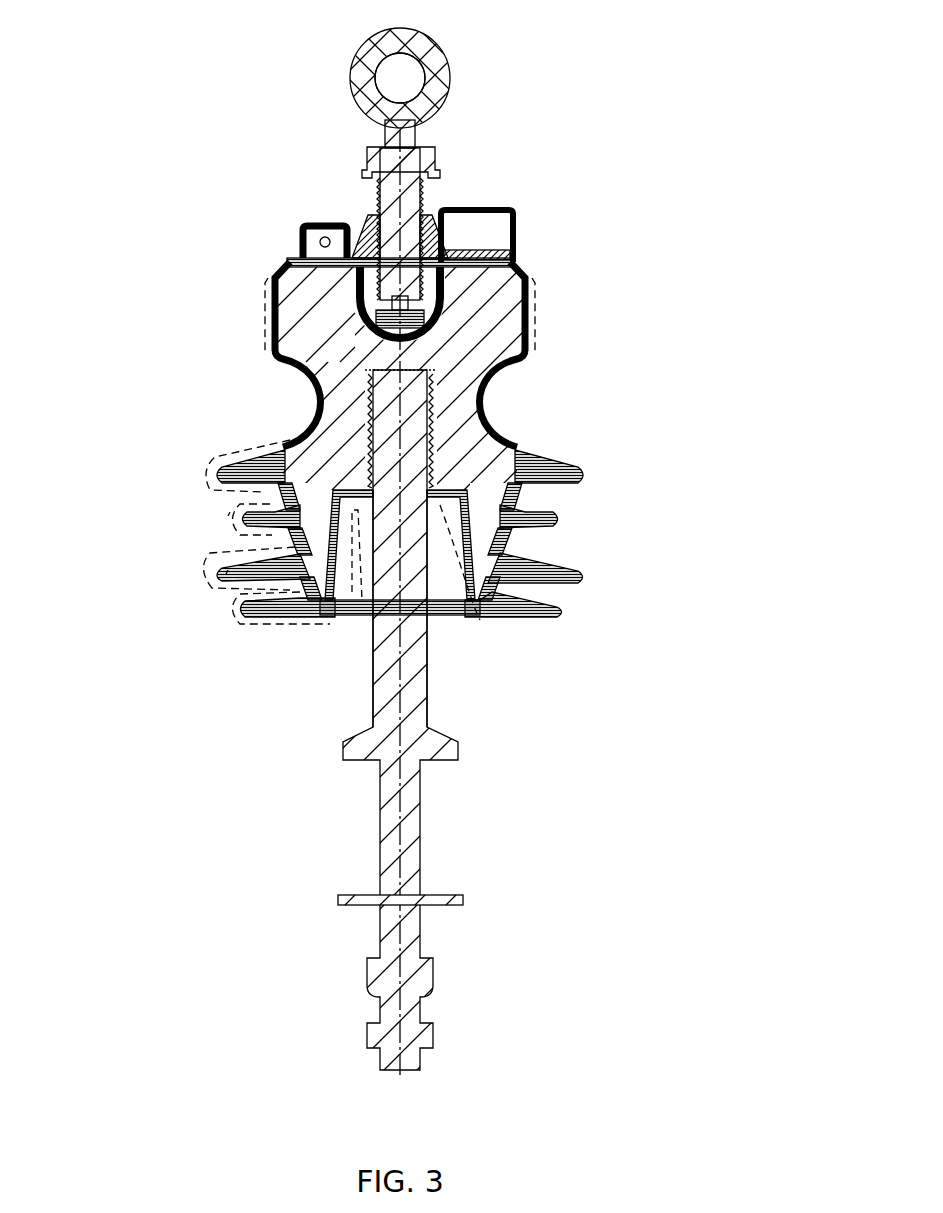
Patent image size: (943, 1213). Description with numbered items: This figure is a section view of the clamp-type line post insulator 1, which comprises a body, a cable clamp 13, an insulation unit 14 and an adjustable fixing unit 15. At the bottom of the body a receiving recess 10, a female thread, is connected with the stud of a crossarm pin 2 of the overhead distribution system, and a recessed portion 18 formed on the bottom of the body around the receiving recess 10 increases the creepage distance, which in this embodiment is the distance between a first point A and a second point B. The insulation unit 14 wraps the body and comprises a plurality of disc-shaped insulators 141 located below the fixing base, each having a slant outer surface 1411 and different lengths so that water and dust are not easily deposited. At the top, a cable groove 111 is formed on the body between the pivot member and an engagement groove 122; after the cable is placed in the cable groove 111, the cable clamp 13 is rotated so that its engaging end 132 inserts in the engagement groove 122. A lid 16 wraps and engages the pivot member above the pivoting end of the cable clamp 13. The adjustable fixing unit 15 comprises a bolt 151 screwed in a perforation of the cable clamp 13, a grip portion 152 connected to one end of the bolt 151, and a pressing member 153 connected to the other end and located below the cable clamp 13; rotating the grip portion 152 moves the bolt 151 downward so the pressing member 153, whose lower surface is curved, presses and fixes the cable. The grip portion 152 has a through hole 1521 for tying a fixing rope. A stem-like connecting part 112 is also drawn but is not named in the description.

The clamp-type line post insulator 1 is at (592, 188).
The crossarm pin 2 is at (425, 830).
The receiving recess 10 is at (433, 505).
The cable clamp 13 is at (438, 262).
The insulation unit 14 is at (272, 330).
The adjustable fixing unit 15 is at (452, 167).
The lid 16 is at (300, 250).
The recessed portion 18 is at (448, 568).
The cable groove 111 is at (436, 330).
The connecting ribs 112 is at (495, 507).
The engagement groove 122 is at (513, 247).
The engaging end 132 is at (513, 262).
The disc-shaped insulators 141 is at (555, 613).
The slant outer surface 1411 is at (243, 515).
The bolt 151 is at (375, 215).
The grip portion 152 is at (362, 115).
The pressing member 153 is at (372, 245).
The through hole 1521 is at (390, 78).